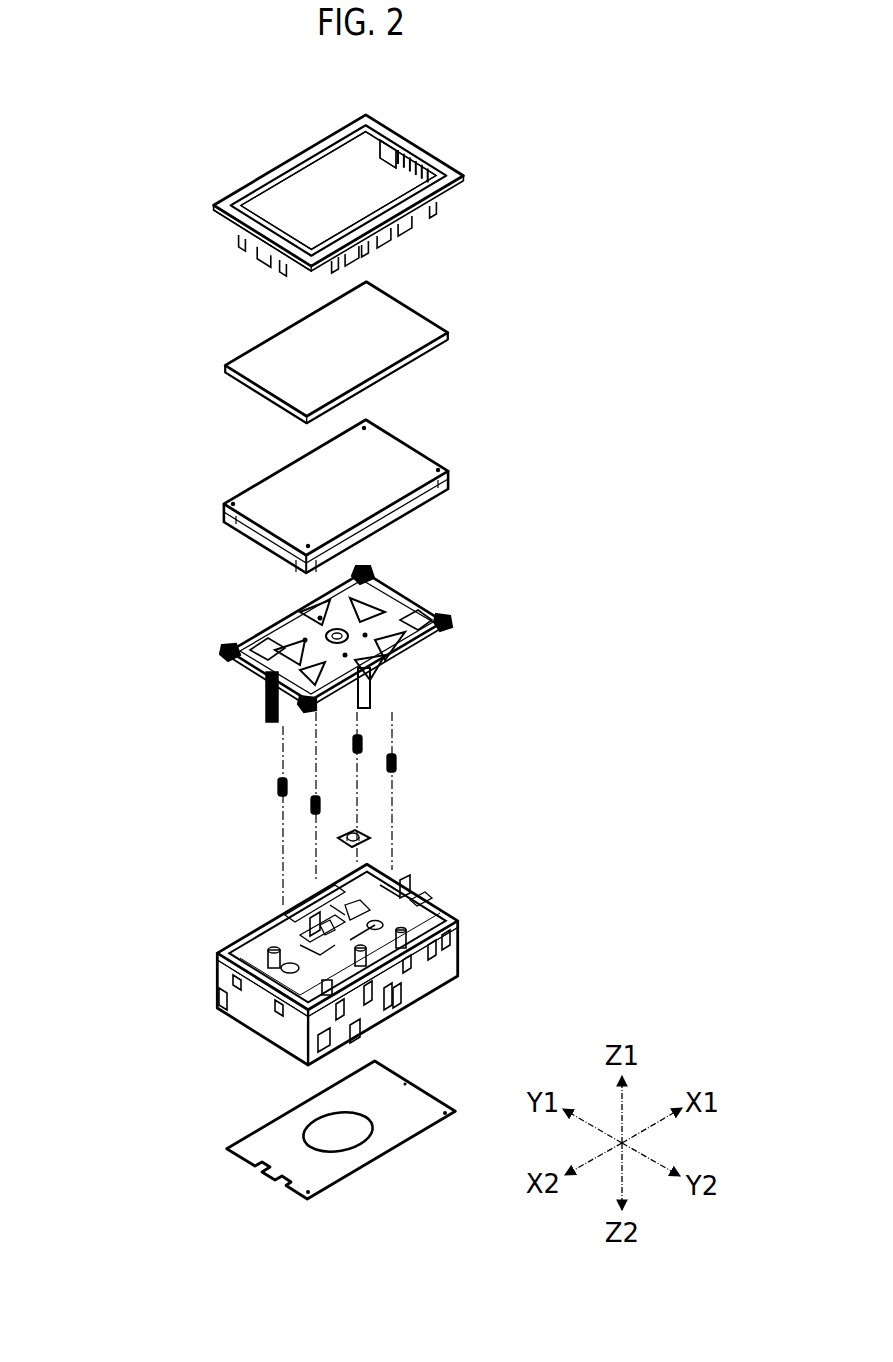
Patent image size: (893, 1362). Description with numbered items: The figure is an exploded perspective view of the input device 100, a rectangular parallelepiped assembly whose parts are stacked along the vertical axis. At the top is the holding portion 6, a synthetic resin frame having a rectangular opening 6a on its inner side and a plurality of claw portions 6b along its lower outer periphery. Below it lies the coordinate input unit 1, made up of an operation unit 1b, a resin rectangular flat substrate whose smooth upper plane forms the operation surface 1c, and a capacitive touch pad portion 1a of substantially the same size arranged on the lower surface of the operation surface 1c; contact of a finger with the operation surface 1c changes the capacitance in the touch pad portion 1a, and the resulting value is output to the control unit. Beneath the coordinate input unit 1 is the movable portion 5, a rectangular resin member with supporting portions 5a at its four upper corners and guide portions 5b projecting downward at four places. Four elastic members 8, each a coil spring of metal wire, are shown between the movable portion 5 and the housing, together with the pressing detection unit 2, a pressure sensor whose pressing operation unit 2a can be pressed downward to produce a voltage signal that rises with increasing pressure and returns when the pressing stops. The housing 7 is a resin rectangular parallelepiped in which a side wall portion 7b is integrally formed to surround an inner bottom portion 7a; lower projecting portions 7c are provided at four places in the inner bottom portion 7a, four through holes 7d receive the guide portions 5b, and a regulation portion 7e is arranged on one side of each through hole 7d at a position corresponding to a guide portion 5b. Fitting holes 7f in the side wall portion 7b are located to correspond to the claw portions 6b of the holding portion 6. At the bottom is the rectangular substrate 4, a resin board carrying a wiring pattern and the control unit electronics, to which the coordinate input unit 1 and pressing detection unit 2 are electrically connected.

The input device 100 is at (528, 185).
The holding portion 6 is at (252, 180).
The rectangular opening 6a is at (331, 186).
The claw portions 6b is at (388, 150).
The coordinate input unit 1 is at (112, 378).
The capacitive touch pad portion 1a is at (232, 508).
The operation unit 1b is at (232, 370).
The operation surface 1c is at (298, 357).
The movable portion 5 is at (300, 606).
The supporting portions 5a is at (230, 651).
The guide portions 5b is at (266, 714).
The elastic member 8 is at (278, 787).
The pressing detection unit 2 is at (365, 840).
The pressing operation unit 2a is at (355, 833).
The housing 7 is at (218, 963).
The inner bottom portion 7a is at (315, 935).
The side wall portion 7b is at (243, 1012).
The lower projecting portions 7c is at (320, 900).
The through holes 7d is at (305, 925).
The regulation portion 7e is at (315, 920).
The fitting hole 7f is at (218, 1000).
The substrate 4 is at (235, 1147).